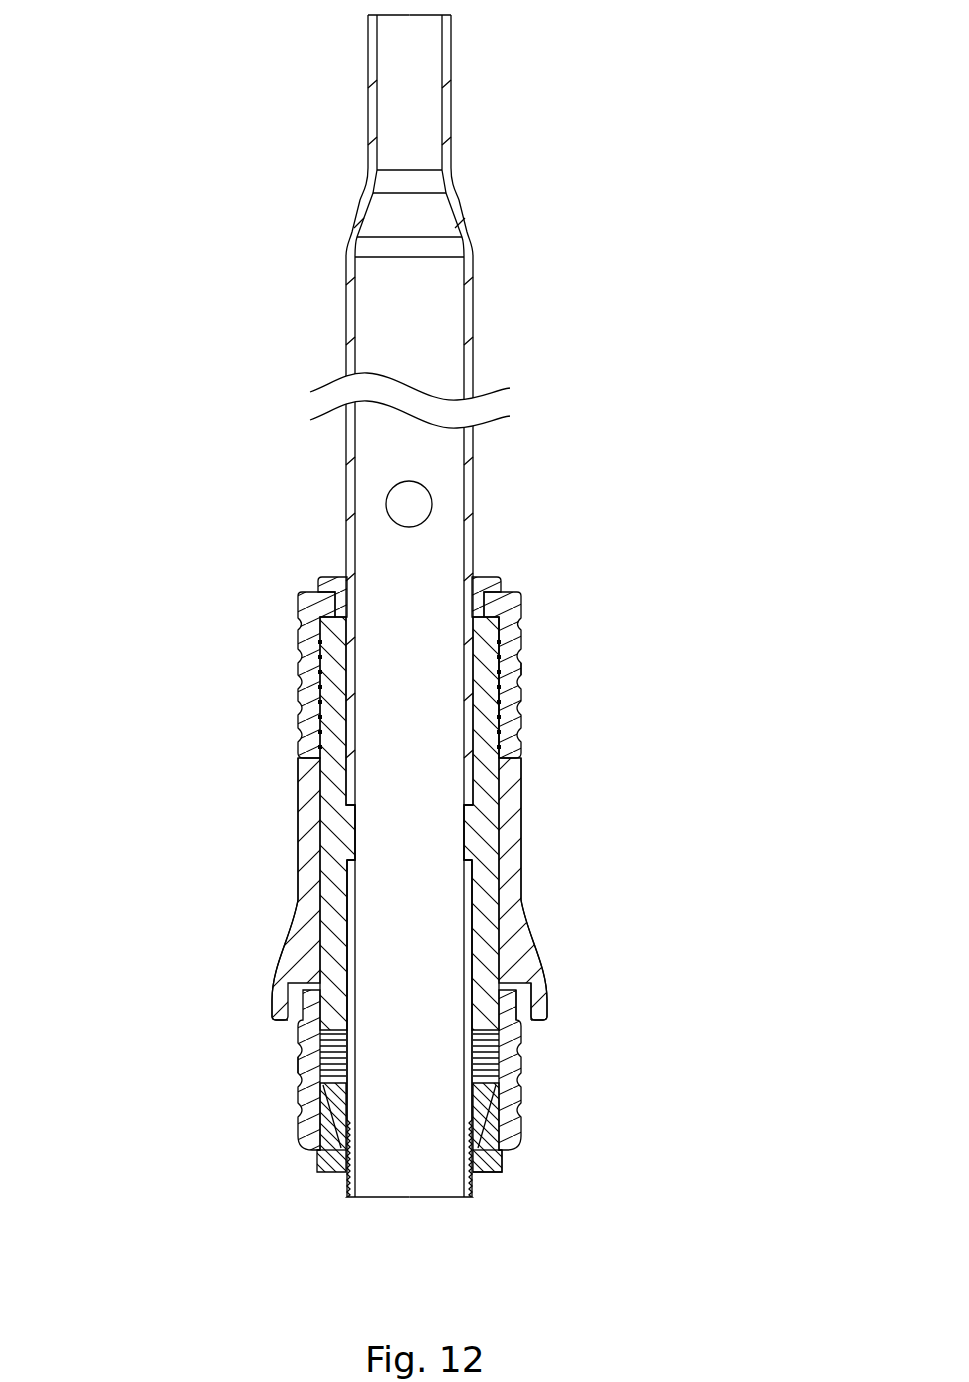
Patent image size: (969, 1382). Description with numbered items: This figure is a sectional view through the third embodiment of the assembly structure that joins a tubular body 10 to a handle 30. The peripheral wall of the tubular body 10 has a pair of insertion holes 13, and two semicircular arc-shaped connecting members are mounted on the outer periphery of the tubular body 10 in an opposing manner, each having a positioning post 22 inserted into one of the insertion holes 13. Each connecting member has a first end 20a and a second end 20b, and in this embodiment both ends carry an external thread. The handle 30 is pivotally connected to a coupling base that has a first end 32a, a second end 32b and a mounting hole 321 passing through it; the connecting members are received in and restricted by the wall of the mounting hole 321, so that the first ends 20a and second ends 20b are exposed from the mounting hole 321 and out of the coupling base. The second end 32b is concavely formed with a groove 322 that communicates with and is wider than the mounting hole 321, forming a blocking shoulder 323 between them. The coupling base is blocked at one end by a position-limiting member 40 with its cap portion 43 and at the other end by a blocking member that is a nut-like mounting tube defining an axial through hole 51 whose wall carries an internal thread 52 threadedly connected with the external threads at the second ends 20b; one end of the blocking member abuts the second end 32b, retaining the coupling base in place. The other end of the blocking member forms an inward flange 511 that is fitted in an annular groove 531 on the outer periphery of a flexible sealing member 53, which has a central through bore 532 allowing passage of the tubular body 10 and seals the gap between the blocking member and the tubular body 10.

The tubular body 10 is at (474, 482).
The insertion hole 13 is at (343, 892).
The positioning post 22 is at (352, 845).
The first end 20a is at (517, 623).
The second end 20b is at (300, 1112).
The cap 43 is at (323, 575).
The position-limiting member 40 is at (293, 630).
The handle 30 is at (527, 878).
The first end 32a is at (302, 760).
The mounting hole 321 is at (512, 793).
The second end 32b is at (282, 1012).
The blocking shoulder 323 is at (532, 972).
The groove 322 is at (525, 1012).
The internal thread 52 is at (302, 1062).
The through hole 51 is at (518, 1080).
The flexible sealing member 53 is at (335, 1177).
The through bore 532 is at (330, 1168).
The annular groove 531 is at (486, 1176).
The flange 511 is at (487, 1161).